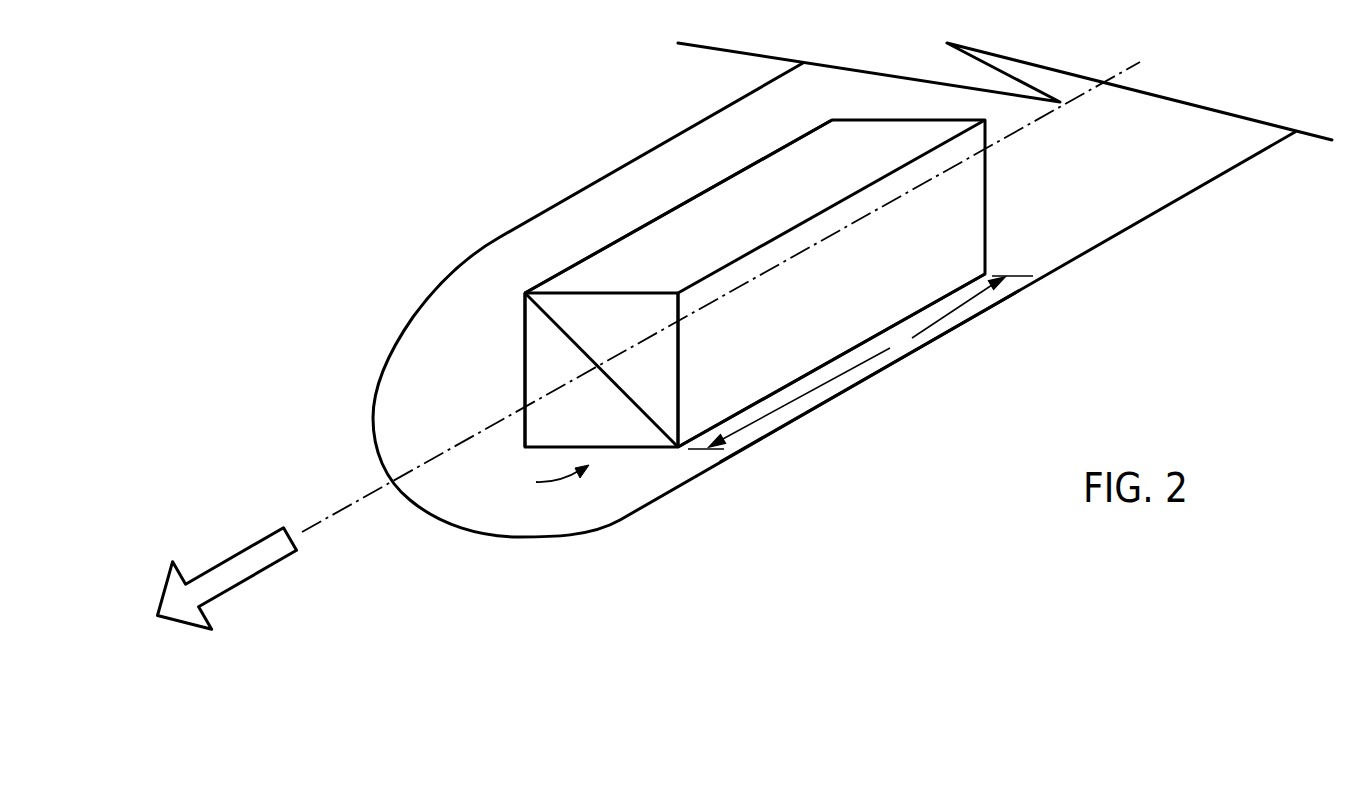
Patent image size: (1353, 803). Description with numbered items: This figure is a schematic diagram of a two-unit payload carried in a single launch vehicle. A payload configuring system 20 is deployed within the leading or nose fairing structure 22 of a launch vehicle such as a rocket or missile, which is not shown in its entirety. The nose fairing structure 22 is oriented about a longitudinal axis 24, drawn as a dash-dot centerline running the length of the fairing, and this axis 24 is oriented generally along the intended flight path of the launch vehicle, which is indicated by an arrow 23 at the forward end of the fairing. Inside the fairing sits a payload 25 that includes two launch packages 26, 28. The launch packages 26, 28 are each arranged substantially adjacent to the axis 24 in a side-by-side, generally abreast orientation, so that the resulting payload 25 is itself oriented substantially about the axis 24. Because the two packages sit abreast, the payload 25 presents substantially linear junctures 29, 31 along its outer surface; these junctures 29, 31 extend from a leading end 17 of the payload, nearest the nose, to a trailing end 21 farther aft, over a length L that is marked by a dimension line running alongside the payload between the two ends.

The leading end 17 is at (600, 430).
The payload configuring system 20 is at (784, 590).
The trailing end 21 is at (987, 237).
The nose fairing structure 22 is at (790, 421).
The arrow 23 is at (253, 577).
The longitudinal axis 24 is at (310, 528).
The payload 25 is at (547, 481).
The launch package 26 is at (536, 369).
The launch package 28 is at (672, 380).
The linear juncture 29 is at (632, 233).
The linear juncture 31 is at (910, 315).